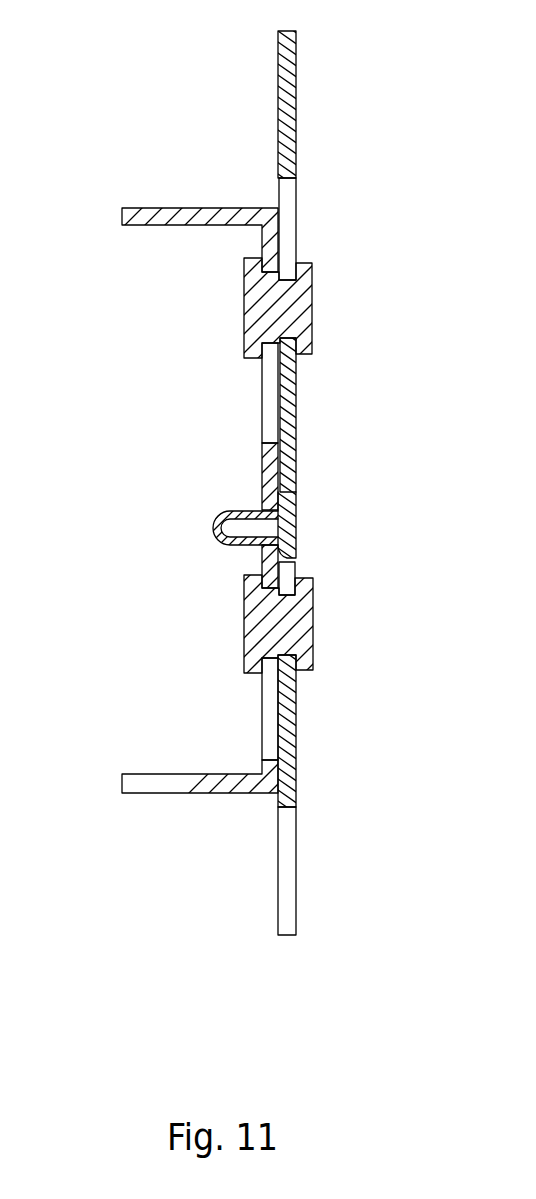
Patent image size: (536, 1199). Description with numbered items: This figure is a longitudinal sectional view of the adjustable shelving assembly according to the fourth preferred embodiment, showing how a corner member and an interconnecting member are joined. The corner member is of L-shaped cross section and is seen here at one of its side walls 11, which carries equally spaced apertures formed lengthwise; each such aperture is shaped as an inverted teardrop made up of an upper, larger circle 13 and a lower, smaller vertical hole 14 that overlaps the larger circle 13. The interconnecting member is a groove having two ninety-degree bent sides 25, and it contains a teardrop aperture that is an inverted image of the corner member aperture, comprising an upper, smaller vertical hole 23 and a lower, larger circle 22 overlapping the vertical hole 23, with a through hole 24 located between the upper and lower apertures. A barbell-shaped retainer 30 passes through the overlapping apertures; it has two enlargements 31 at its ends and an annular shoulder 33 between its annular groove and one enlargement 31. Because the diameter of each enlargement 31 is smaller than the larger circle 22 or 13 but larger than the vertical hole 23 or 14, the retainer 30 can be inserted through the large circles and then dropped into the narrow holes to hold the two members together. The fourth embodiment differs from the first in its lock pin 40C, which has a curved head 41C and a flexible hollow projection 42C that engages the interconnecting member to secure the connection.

The side wall 11 is at (296, 56).
The larger circle 13 is at (290, 213).
The vertical hole 14 is at (296, 676).
The larger circle 22 is at (265, 396).
The vertical hole 23 is at (273, 582).
The through hole 24 is at (262, 502).
The bent side 25 is at (177, 794).
The retainer 30 is at (292, 449).
The enlargement 31 is at (260, 297).
The annular shoulder 33 is at (263, 697).
The lock pin 40C is at (258, 469).
The curved head 41C is at (296, 544).
The flexible hollow projection 42C is at (225, 512).